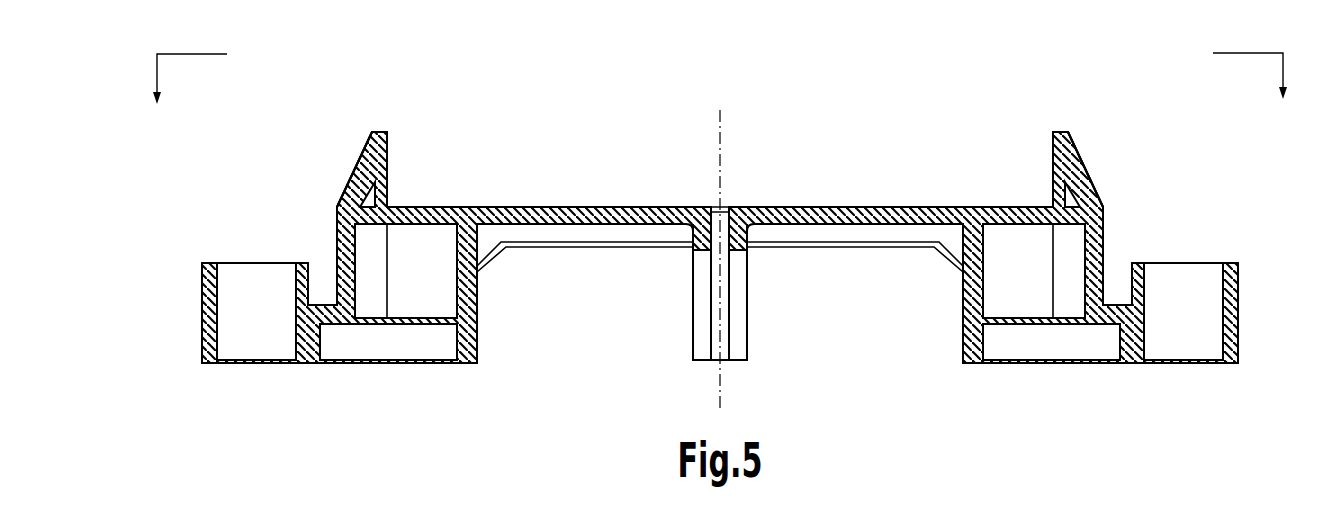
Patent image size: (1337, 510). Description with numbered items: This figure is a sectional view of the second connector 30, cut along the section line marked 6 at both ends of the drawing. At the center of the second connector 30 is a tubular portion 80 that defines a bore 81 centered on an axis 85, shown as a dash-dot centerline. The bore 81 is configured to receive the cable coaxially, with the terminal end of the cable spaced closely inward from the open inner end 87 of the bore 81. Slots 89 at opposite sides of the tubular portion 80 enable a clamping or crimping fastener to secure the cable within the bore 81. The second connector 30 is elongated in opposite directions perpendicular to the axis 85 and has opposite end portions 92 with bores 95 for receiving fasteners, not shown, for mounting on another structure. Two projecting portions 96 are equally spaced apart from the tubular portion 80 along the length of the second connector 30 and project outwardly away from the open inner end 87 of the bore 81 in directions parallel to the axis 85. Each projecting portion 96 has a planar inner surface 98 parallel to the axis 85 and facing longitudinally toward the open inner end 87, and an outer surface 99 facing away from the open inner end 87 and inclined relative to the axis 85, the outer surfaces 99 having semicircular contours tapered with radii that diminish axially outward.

The second connector 30 is at (482, 90).
The tubular portion 80 is at (693, 340).
The bore 81 is at (709, 372).
The axis 85 is at (720, 172).
The open inner end 87 is at (726, 207).
The slots 89 is at (700, 292).
The end portions 92 is at (202, 303).
The bores 95 is at (251, 247).
The projecting portions 96 is at (380, 131).
The planar inner surface 98 is at (388, 158).
The outer surface 99 is at (362, 155).
The section line 6 is at (718, 90).